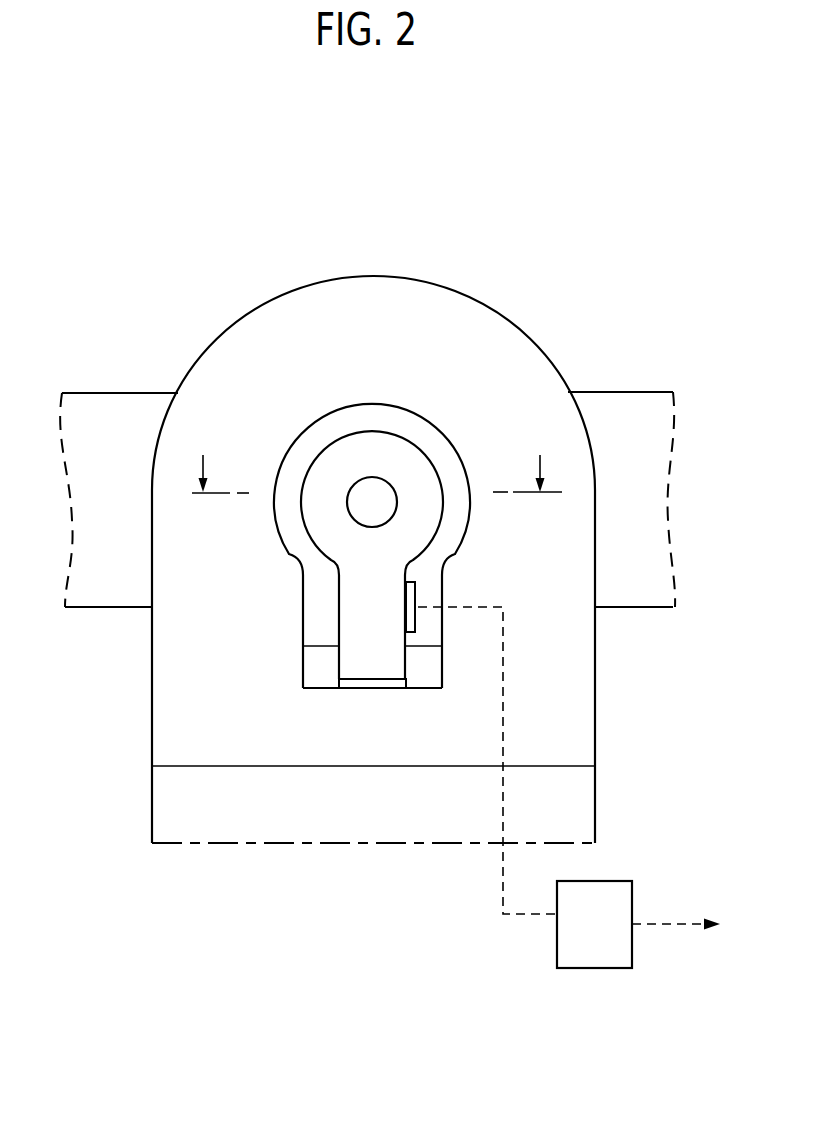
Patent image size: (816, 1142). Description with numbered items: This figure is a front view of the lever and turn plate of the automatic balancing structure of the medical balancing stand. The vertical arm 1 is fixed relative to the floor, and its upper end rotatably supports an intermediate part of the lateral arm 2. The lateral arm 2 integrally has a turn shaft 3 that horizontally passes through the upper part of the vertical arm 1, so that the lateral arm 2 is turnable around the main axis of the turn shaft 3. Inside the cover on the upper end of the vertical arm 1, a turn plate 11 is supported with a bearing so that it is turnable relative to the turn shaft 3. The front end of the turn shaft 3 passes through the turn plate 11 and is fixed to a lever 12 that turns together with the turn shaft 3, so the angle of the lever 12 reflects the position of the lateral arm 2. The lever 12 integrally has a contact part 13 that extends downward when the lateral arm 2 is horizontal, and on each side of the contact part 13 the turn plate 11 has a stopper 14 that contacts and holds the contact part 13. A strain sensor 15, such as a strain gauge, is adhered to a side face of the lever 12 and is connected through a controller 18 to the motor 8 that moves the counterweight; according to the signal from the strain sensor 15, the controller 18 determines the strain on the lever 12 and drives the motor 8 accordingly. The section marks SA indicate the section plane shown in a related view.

The vertical arm 1 is at (371, 275).
The lateral arm 2 is at (118, 393).
The turn shaft 3 is at (346, 502).
The motor 8 is at (690, 924).
The turn plate 11 is at (453, 444).
The lever 12 is at (373, 432).
The contact part 13 is at (375, 670).
The stopper 14 is at (320, 672).
The strain sensor 15 is at (416, 597).
The controller 18 is at (604, 881).
The section plane SA is at (376, 457).